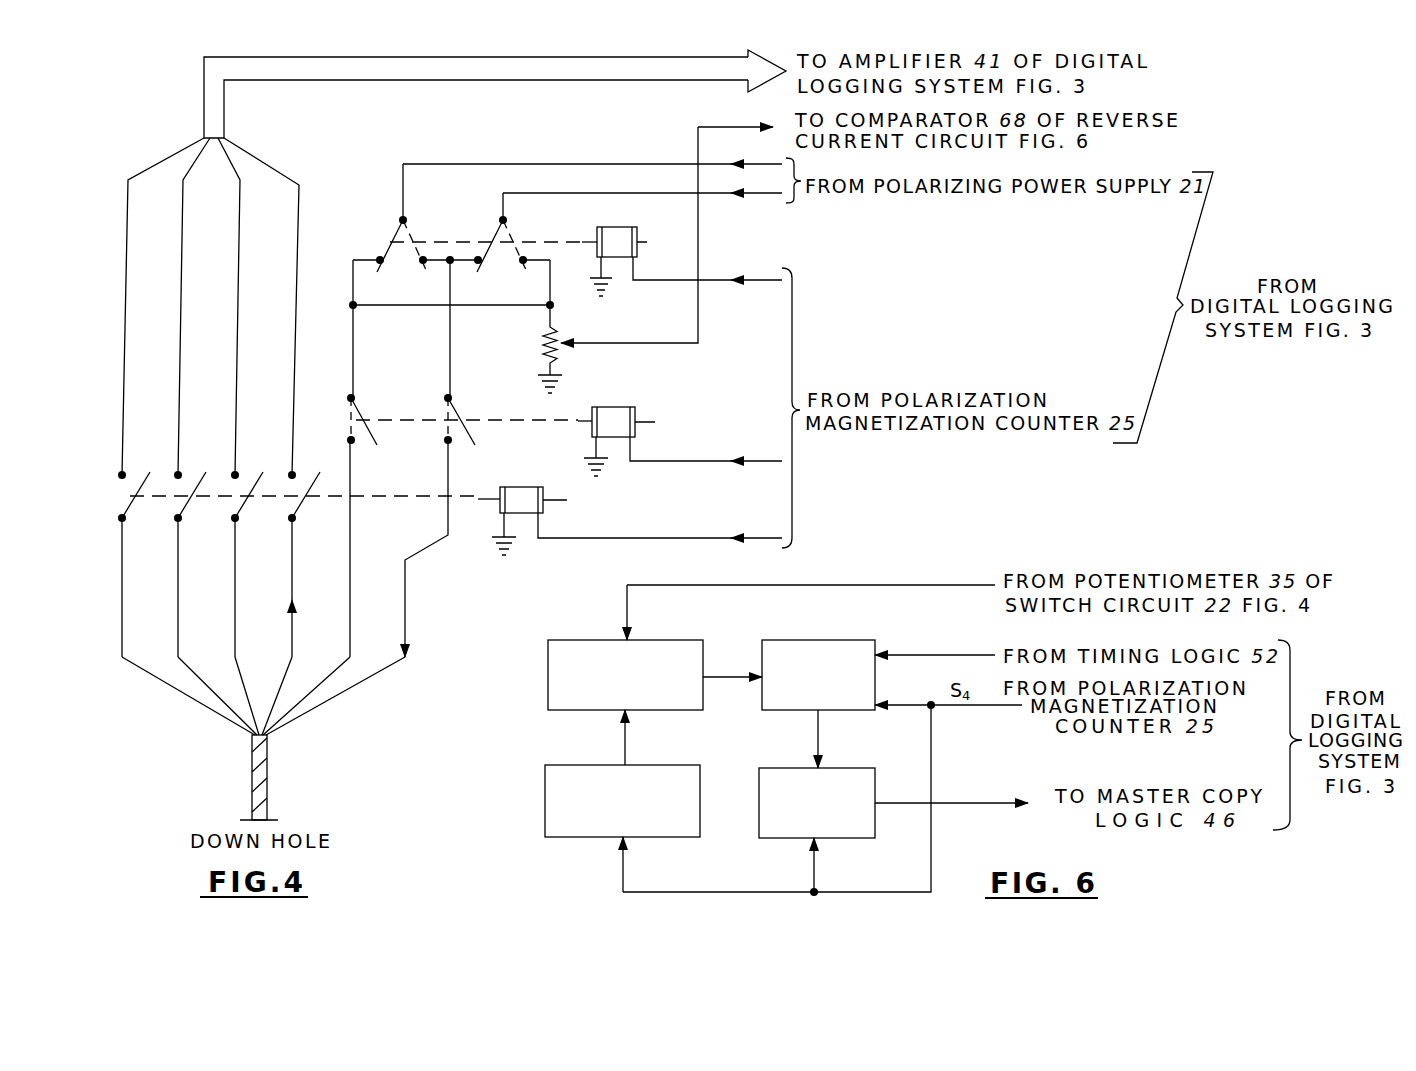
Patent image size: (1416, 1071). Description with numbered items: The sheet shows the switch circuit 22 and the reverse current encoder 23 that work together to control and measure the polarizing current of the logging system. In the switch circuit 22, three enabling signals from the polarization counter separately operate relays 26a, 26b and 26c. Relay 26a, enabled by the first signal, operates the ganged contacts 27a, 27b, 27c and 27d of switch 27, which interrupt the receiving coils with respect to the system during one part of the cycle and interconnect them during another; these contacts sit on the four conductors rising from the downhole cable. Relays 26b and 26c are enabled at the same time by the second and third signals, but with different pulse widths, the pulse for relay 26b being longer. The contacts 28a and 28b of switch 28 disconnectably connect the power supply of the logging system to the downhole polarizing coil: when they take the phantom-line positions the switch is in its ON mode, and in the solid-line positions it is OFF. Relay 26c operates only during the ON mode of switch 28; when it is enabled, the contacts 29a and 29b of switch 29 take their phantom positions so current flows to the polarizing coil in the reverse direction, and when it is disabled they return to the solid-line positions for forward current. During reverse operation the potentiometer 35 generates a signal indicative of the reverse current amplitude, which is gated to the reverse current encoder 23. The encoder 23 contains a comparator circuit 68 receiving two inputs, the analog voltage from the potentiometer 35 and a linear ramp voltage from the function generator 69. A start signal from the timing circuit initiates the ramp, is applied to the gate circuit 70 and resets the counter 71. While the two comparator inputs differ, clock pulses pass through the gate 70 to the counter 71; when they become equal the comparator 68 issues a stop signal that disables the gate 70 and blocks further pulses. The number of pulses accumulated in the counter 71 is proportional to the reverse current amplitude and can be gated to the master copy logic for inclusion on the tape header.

In FIG. 4, the switch circuit 22 is at (440, 590).
In FIG. 6, the reverse current encoder 23 is at (530, 852).
In FIG. 4, the relay 26a is at (522, 485).
In FIG. 4, the relay 26b is at (617, 405).
In FIG. 4, the relay 26c is at (617, 228).
In FIG. 4, the switch 27 is at (213, 428).
In FIG. 4, the ganged contact 27a is at (128, 508).
In FIG. 4, the ganged contact 27b is at (184, 508).
In FIG. 4, the ganged contact 27c is at (241, 508).
In FIG. 4, the ganged contact 27d is at (298, 508).
In FIG. 4, the switch 28 is at (408, 442).
In FIG. 4, the contact 28a is at (360, 406).
In FIG. 4, the contact 28b is at (457, 406).
In FIG. 4, the switch 29 is at (426, 204).
In FIG. 4, the contact 29a is at (398, 237).
In FIG. 4, the contact 29b is at (493, 240).
In FIG. 4, the potentiometer 35 is at (545, 347).
In FIG. 6, the comparator circuit 68 is at (582, 637).
In FIG. 6, the function generator 69 is at (545, 798).
In FIG. 6, the gate circuit 70 is at (820, 642).
In FIG. 6, the counter 71 is at (770, 763).